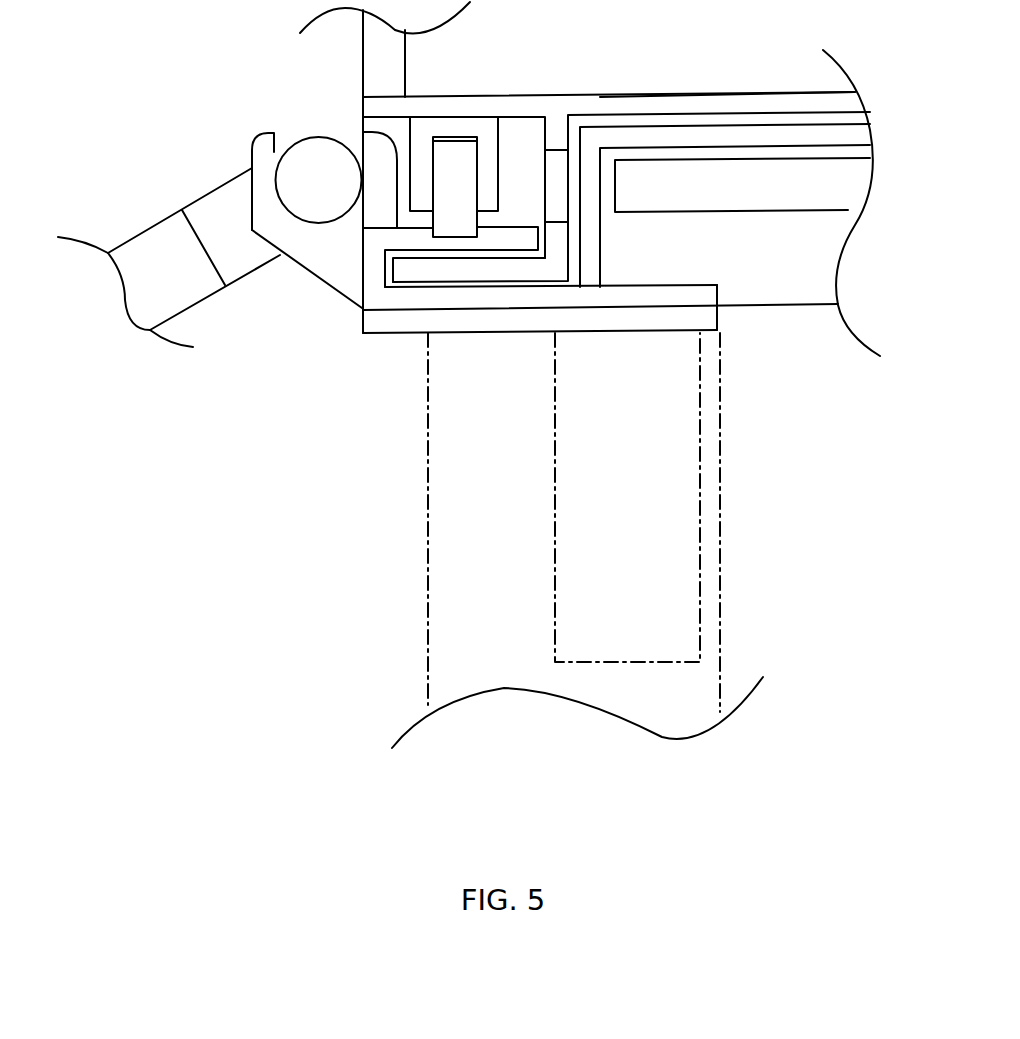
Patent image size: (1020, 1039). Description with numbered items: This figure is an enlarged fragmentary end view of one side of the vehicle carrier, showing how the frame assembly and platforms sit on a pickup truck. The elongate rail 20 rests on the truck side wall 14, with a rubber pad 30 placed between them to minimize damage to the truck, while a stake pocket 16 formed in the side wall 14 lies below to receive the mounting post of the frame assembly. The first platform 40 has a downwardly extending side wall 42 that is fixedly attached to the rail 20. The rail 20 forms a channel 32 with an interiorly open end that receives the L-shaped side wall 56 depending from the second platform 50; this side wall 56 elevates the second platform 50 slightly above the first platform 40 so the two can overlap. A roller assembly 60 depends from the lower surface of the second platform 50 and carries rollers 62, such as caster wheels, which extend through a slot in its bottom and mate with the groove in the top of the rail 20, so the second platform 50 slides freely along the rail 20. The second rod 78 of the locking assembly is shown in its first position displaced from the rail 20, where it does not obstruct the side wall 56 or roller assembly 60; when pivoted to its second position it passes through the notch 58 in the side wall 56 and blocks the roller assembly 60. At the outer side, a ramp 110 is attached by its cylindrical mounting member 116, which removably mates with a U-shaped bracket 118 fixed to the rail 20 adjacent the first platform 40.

The side wall 14 is at (426, 476).
The stake pocket 16 is at (646, 663).
The rail 20 is at (398, 308).
The pad 30 is at (481, 334).
The channel 32 is at (403, 287).
The first platform 40 is at (828, 125).
The side wall 42 is at (603, 270).
The second platform 50 is at (740, 92).
The L-shaped side wall 56 is at (568, 240).
The notch 58 is at (563, 162).
The roller assembly 60 is at (500, 140).
The roller 62 is at (459, 145).
The second rod 78 is at (780, 212).
The ramp 110 is at (172, 192).
The cylindrical mounting member 116 is at (303, 138).
The U-shaped bracket 118 is at (253, 135).